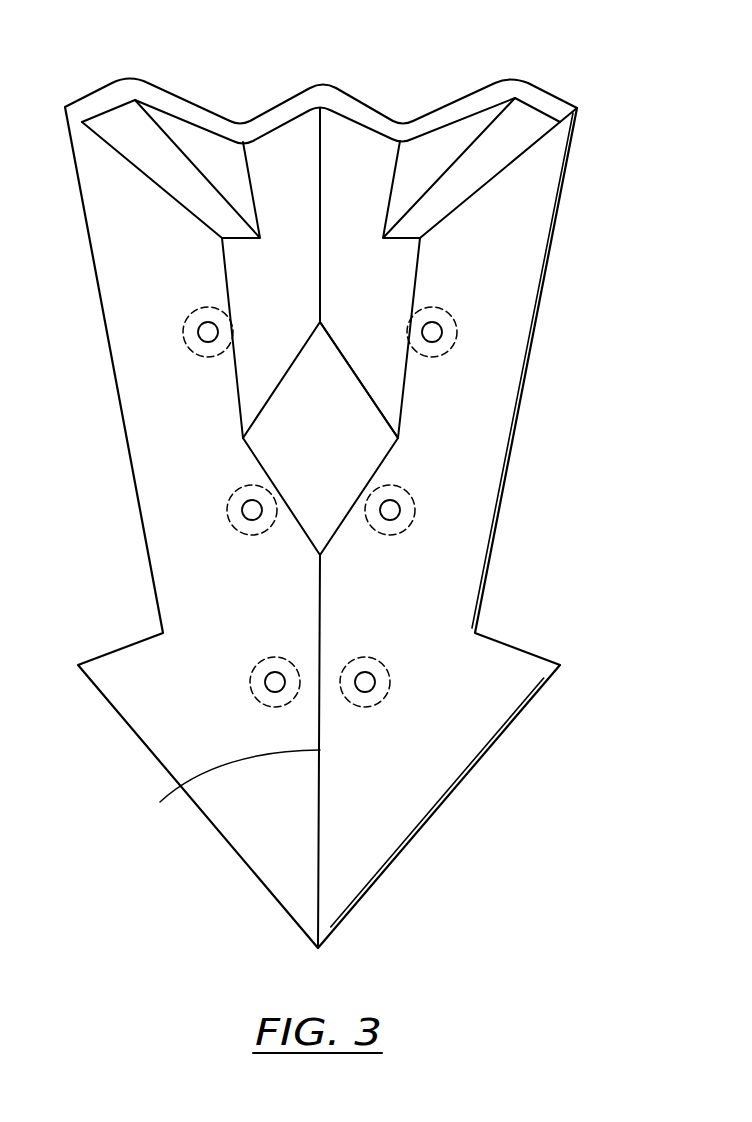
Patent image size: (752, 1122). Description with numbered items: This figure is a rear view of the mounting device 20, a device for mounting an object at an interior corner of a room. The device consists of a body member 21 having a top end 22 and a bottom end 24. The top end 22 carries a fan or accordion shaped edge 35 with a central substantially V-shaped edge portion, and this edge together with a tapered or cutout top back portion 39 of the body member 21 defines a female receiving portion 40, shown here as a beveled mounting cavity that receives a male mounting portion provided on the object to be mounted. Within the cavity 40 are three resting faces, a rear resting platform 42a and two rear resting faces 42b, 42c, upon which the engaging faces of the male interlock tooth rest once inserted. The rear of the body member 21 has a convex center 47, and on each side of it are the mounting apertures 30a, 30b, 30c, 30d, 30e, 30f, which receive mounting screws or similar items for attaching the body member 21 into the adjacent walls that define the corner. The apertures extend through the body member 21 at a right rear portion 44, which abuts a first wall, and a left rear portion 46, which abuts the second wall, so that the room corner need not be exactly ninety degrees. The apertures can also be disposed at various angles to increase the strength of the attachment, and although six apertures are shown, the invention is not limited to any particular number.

The mounting device 20 is at (553, 327).
The body member 21 is at (540, 420).
The top end 22 is at (578, 102).
The bottom end 24 is at (413, 840).
The aperture 30a is at (438, 324).
The aperture 30b is at (203, 323).
The aperture 30c is at (399, 502).
The aperture 30d is at (244, 503).
The aperture 30e is at (371, 671).
The aperture 30f is at (268, 673).
The fan or accordion shaped edge 35 is at (275, 103).
The cutout top back portion 39 is at (338, 369).
The female receiving portion 40 is at (333, 143).
The rear resting platform 42a is at (337, 454).
The rear resting face 42b is at (292, 306).
The rear resting face 42c is at (387, 306).
The right rear portion 44 is at (122, 203).
The left rear portion 46 is at (470, 240).
The convex center 47 is at (224, 787).